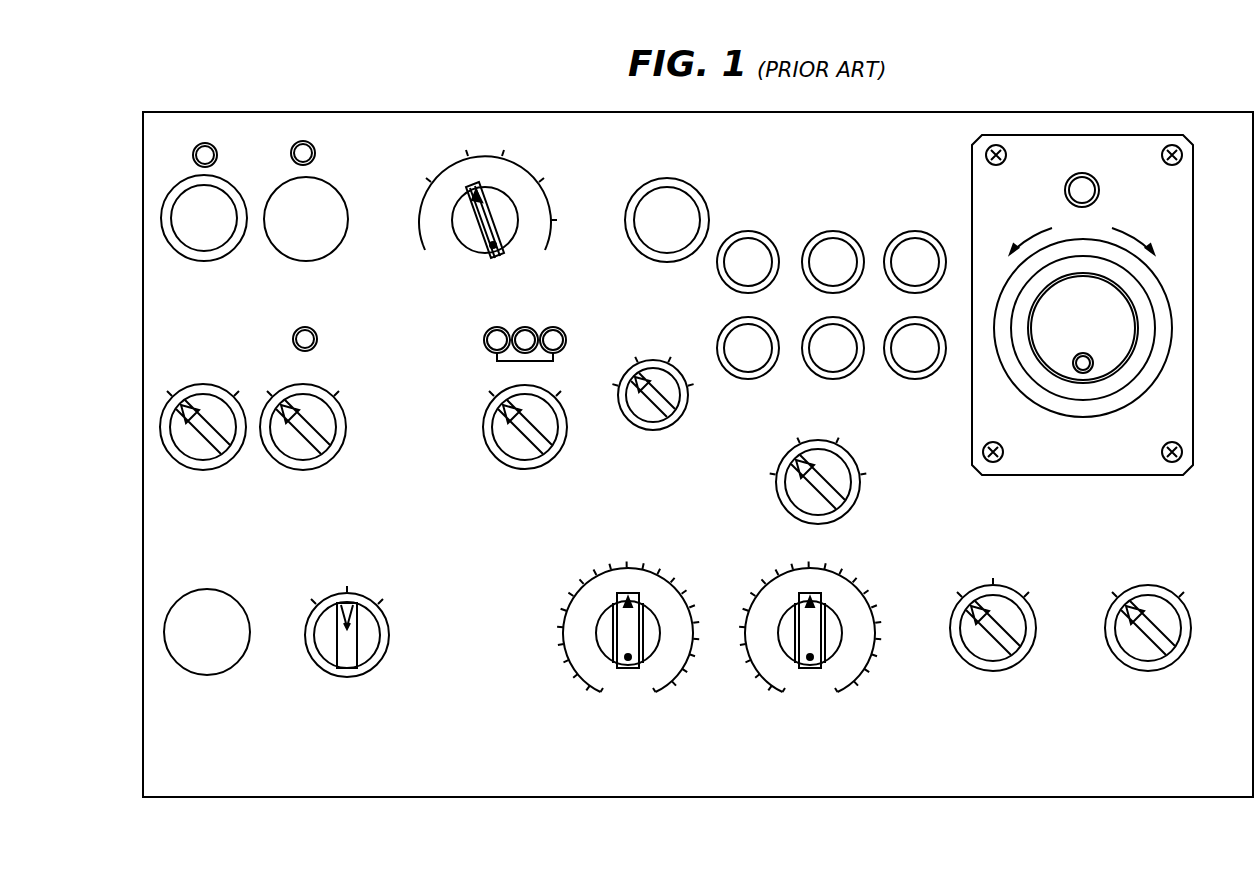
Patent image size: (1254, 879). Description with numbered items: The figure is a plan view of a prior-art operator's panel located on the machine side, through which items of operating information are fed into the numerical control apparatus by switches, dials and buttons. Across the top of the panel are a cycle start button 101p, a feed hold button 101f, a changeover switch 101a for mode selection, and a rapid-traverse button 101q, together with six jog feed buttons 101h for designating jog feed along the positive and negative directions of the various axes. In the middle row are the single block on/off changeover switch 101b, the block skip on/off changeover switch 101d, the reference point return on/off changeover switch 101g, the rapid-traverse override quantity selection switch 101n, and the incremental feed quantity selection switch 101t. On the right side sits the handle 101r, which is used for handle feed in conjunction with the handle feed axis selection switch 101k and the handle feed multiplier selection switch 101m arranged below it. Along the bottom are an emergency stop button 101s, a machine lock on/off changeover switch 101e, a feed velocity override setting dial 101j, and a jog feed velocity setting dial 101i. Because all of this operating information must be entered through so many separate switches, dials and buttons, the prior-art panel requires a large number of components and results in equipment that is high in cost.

The changeover switch for mode selection 101a is at (535, 175).
The single block on/off changeover switch 101b is at (203, 383).
The block skip on/off changeover switch 101d is at (682, 452).
The machine lock on/off changeover switch 101e is at (367, 593).
The feed hold button 101f is at (330, 182).
The reference point return on/off changeover switch 101g is at (558, 448).
The jog feed buttons 101h is at (803, 389).
The jog feed velocity setting dial 101i is at (852, 580).
The feed velocity override setting dial 101j is at (657, 572).
The handle feed axis selection switch 101k is at (1005, 585).
The handle feed multiplier selection switch 101m is at (1148, 590).
The rapid-traverse override quantity selection switch 101n is at (652, 360).
The cycle start button 101p is at (230, 180).
The rapid-traverse button 101q is at (668, 178).
The handle 101r is at (1010, 462).
The emergency stop button 101s is at (203, 590).
The incremental feed quantity selection switch 101t is at (862, 490).